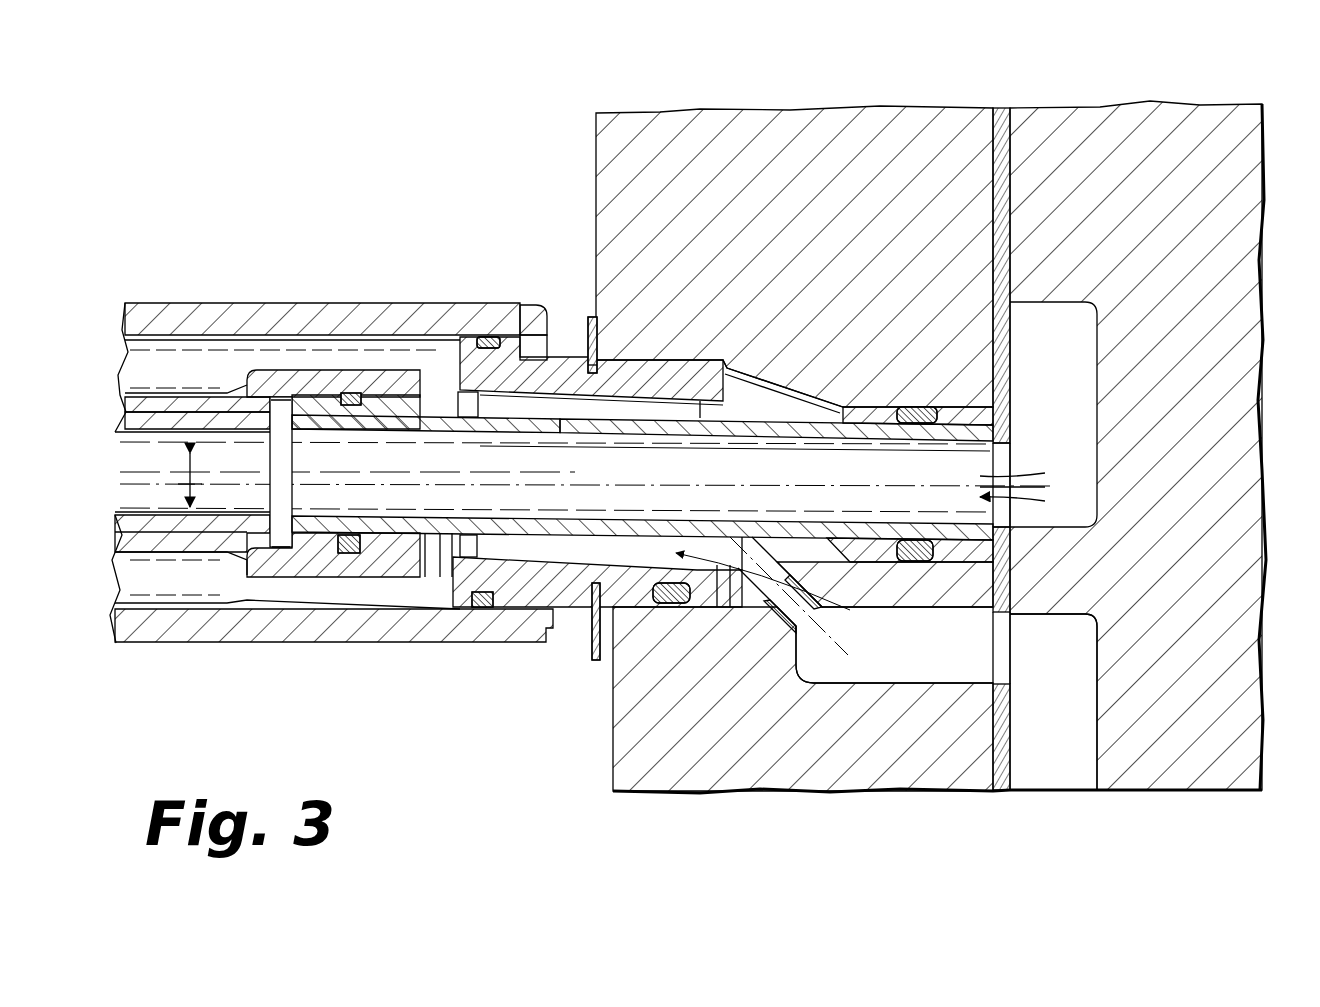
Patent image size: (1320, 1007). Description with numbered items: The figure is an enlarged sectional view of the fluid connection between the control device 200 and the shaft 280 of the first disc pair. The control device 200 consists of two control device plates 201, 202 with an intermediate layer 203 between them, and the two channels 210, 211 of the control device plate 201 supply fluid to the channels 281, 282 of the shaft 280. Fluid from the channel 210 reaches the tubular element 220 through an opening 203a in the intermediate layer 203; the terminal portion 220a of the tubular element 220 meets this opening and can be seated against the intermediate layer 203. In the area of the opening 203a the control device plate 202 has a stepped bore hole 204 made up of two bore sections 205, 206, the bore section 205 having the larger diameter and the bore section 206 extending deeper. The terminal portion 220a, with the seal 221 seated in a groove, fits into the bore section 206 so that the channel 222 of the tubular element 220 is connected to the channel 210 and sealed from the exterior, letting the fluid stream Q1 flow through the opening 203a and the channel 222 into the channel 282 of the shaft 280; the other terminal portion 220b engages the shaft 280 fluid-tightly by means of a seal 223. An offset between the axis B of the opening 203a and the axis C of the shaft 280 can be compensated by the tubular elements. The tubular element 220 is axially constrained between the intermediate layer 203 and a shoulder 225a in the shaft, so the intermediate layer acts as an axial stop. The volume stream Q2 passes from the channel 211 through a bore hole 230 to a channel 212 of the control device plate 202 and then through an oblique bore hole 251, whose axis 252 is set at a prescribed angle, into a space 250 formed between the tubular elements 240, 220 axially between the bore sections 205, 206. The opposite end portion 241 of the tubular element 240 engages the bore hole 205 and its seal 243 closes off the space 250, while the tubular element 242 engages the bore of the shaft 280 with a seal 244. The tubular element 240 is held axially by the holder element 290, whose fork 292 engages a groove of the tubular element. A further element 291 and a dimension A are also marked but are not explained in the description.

The control device 200 is at (958, 433).
The control device plate 201 is at (1242, 182).
The control device plate 202 is at (838, 765).
The intermediate layer 203 is at (1000, 778).
The opening 203a is at (1008, 445).
The stepped bore hole 204 is at (800, 385).
The bore section 205 is at (724, 368).
The bore section 206 is at (866, 400).
The channel 210 is at (1035, 305).
The channel 211 is at (1048, 760).
The channel 212 is at (920, 675).
The tubular element 220 is at (440, 525).
The terminal portion 220a is at (955, 540).
The terminal portion 220b is at (322, 548).
The seal 221 is at (883, 540).
The channel 222 is at (372, 450).
The seal 223 is at (356, 552).
The shoulder 225a is at (280, 412).
The bore hole 230 is at (1010, 657).
The tubular element 240 is at (526, 365).
The opposite end portion 241 is at (712, 420).
The tubular element 242 is at (470, 350).
The seal 243 is at (655, 600).
The seal 244 is at (484, 643).
The space 250 is at (765, 410).
The oblique bore hole 251 is at (885, 608).
The axis 252 is at (783, 780).
The shaft 280 is at (200, 312).
The channel 281 is at (140, 365).
The channel 282 is at (135, 458).
The holder element 290 is at (593, 640).
The upper plate 291 is at (598, 360).
The fork 292 is at (591, 372).
The diameter A is at (185, 474).
The axis B is at (665, 490).
The axis C is at (135, 482).
The fluid stream Q1 is at (1030, 490).
The volume stream Q2 is at (812, 604).